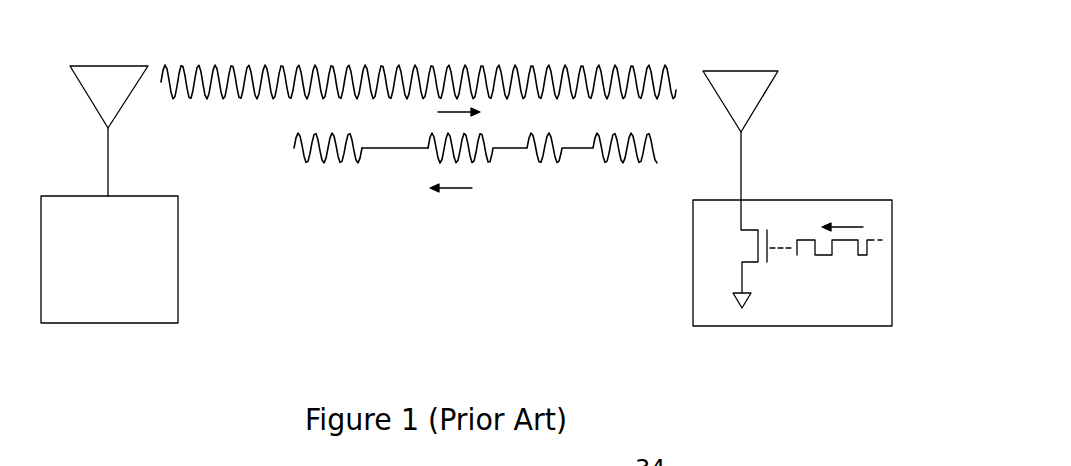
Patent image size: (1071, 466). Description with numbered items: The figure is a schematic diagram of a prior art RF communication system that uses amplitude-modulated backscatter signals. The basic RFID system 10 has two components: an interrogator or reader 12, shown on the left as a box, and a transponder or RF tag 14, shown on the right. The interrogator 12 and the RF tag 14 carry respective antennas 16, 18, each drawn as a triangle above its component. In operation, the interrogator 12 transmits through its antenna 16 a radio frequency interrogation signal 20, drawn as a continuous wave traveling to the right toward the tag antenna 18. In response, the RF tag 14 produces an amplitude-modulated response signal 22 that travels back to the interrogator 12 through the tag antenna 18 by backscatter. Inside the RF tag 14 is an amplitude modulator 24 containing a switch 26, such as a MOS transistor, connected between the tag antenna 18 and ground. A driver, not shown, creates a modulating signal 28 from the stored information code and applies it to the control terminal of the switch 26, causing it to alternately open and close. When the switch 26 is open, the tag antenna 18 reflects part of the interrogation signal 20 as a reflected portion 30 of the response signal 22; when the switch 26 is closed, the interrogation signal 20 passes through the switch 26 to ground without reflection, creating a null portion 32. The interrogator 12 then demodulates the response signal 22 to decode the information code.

The RFID system 10 is at (858, 136).
The interrogator 12 is at (163, 237).
The RF tag 14 is at (792, 240).
The interrogator antenna 16 is at (100, 90).
The tag antenna 18 is at (750, 107).
The interrogation signal 20 is at (635, 97).
The response signal 22 is at (462, 183).
The amplitude modulator 24 is at (792, 287).
The switch 26 is at (760, 265).
The modulating signal 28 is at (832, 257).
The reflected portion 30 is at (325, 163).
The null portion 32 is at (398, 149).